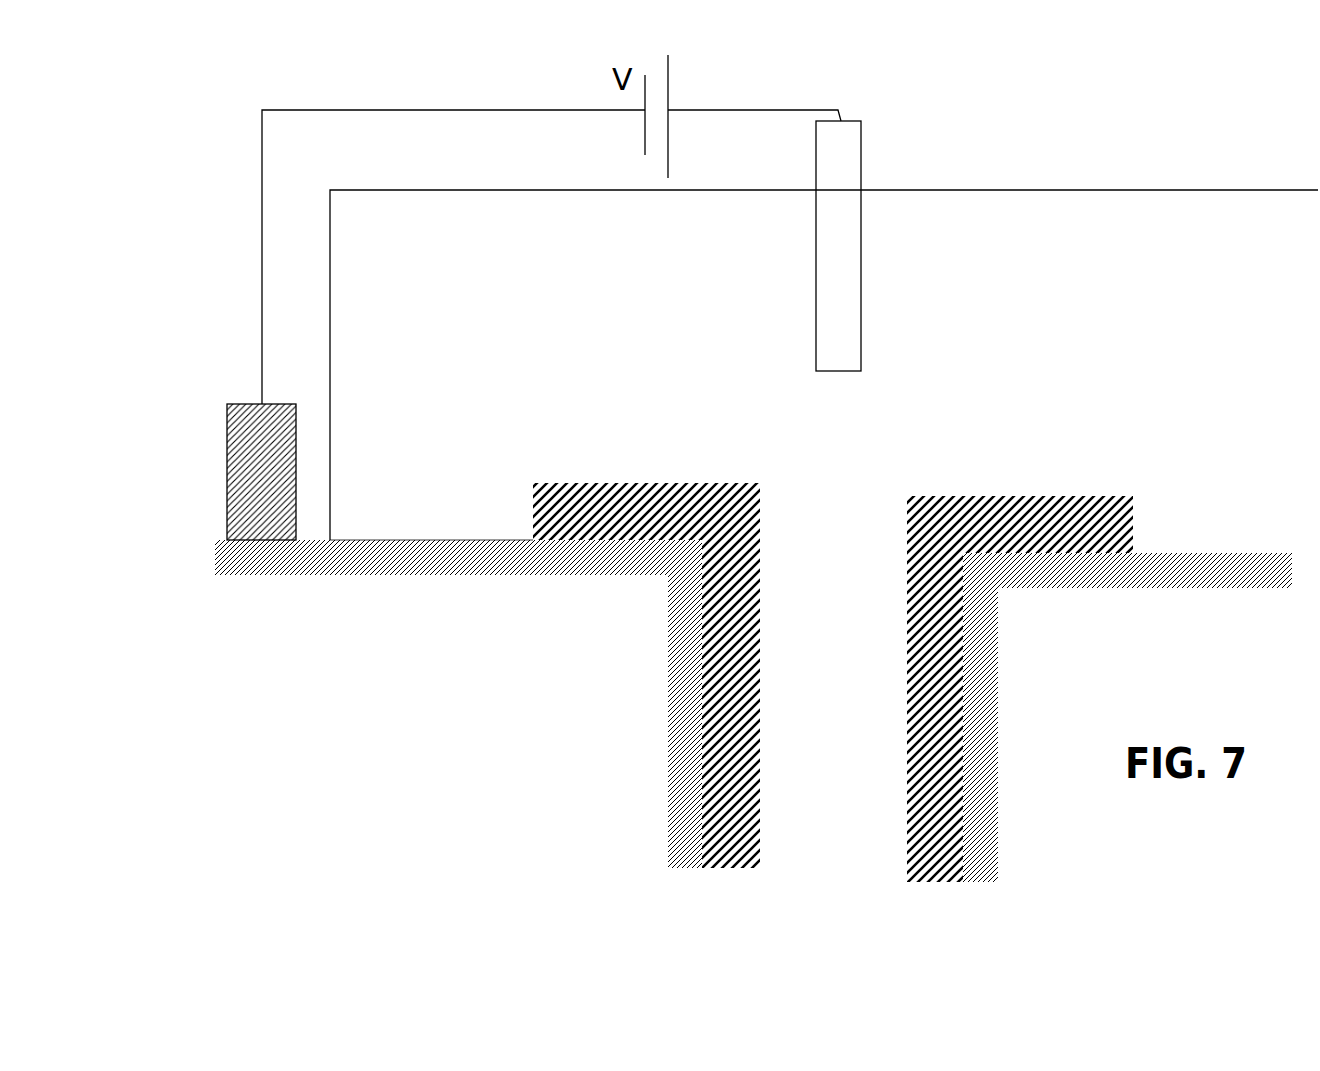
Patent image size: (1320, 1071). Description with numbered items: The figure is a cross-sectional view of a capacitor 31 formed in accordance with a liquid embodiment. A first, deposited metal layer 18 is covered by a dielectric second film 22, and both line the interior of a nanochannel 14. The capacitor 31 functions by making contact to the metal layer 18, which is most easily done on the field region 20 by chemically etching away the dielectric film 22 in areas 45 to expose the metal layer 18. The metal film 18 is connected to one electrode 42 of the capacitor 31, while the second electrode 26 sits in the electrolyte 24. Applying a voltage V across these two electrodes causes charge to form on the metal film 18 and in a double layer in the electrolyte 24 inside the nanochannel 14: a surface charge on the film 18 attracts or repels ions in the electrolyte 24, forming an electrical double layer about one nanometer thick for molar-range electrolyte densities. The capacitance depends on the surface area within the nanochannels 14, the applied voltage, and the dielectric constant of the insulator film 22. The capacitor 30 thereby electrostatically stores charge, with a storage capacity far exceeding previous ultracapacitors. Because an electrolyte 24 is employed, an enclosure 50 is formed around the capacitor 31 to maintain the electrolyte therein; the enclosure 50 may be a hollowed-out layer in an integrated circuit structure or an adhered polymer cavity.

The nanochannel 14 is at (860, 530).
The first deposited metal layer 18 is at (483, 540).
The field region 20 is at (397, 540).
The dielectric second film 22 is at (667, 485).
The electrolyte 24 is at (1091, 380).
The electrode 26 is at (861, 131).
The capacitor 30 is at (413, 807).
The capacitor 31 is at (510, 245).
The electrode 42 is at (250, 404).
The areas 45 is at (443, 450).
The enclosure 50 is at (1125, 190).